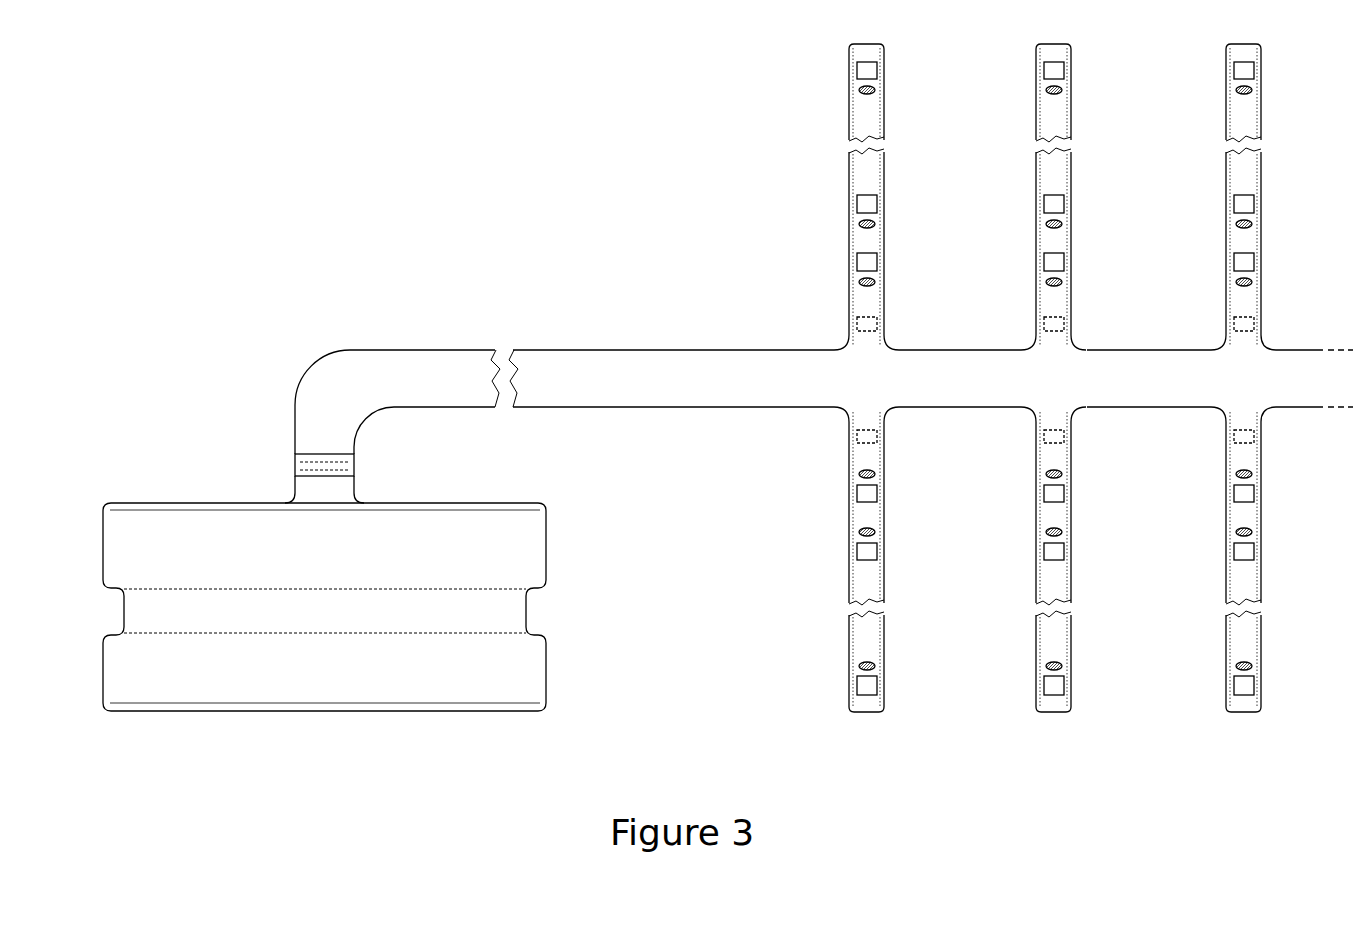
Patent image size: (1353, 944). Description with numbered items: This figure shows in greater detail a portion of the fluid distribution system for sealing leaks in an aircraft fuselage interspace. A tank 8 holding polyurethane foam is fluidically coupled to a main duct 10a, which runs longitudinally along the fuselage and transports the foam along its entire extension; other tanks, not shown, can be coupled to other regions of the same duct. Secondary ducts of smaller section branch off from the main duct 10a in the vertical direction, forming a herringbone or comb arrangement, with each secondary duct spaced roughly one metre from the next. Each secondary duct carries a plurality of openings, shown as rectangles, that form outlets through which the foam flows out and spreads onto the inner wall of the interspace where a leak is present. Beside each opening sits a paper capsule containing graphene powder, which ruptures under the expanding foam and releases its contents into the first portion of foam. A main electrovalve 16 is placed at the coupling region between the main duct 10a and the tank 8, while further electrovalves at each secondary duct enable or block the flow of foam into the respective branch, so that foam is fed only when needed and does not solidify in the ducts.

The tank 8 is at (425, 686).
The main duct 10a is at (636, 368).
The main electrovalve 16 is at (294, 466).